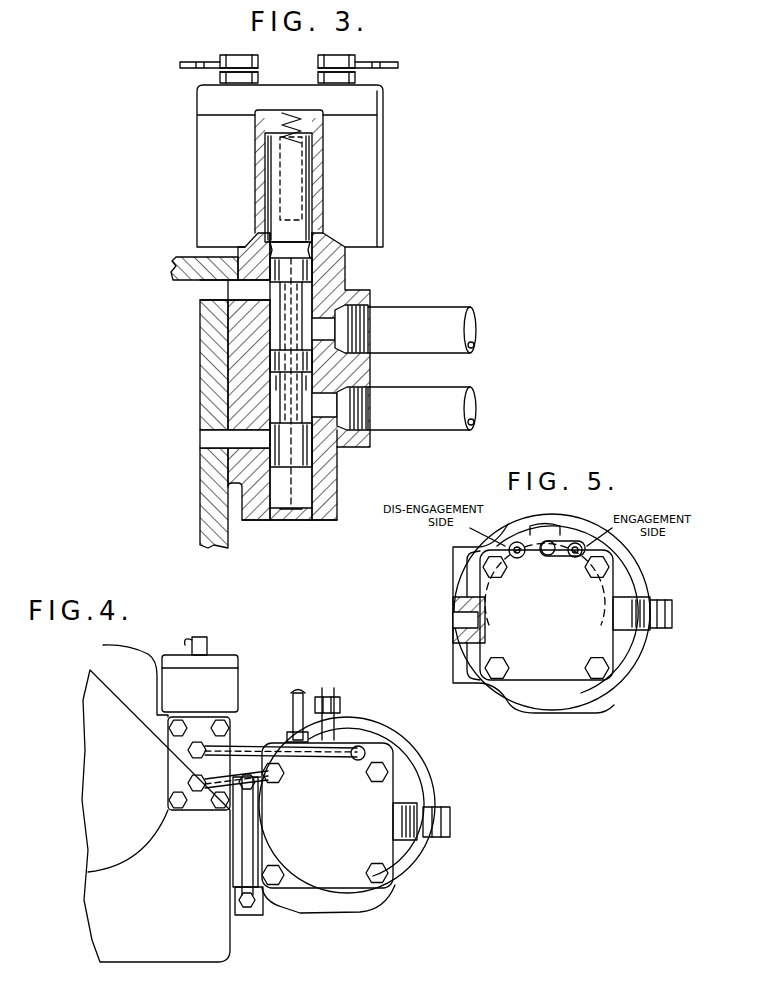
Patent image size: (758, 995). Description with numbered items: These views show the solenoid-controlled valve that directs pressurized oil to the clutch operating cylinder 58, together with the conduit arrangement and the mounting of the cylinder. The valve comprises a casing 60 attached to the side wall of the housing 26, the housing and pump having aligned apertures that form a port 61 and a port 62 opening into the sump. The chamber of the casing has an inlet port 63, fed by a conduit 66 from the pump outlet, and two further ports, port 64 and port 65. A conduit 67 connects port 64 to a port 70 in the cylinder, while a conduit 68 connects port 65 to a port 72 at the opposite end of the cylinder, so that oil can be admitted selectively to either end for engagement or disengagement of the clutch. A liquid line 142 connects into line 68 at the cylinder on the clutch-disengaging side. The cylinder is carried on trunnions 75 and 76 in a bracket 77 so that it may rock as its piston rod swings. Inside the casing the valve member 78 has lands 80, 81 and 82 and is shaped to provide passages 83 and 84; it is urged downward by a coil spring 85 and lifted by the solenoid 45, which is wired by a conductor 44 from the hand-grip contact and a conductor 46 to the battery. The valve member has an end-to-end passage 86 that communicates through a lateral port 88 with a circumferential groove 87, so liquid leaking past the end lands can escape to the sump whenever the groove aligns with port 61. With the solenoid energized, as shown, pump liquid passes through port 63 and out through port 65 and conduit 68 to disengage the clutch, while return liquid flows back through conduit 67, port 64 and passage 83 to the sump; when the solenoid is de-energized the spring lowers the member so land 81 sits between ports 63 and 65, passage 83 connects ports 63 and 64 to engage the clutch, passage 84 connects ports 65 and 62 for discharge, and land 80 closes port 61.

In FIG. 3, the housing 26 is at (210, 503).
In FIG. 3, the conductor 44 is at (196, 60).
In FIG. 3, the solenoid 45 is at (368, 172).
In FIG. 3, the conductor 46 is at (390, 64).
In FIG. 4, the clutch operating cylinder 58 is at (377, 850).
In FIG. 3, the casing 60 is at (340, 270).
In FIG. 3, the port 61 is at (215, 290).
In FIG. 3, the port 62 is at (215, 438).
In FIG. 3, the inlet port 63 is at (276, 378).
In FIG. 3, the port 64 is at (368, 305).
In FIG. 3, the port 65 is at (325, 428).
In FIG. 4, the conduit 66 is at (248, 845).
In FIG. 3, the conduit 67 is at (440, 320).
In FIG. 4, the conduit 67 is at (237, 747).
In FIG. 3, the conduit 68 is at (405, 415).
In FIG. 4, the conduit 68 is at (270, 783).
In FIG. 5, the port 70 is at (617, 547).
In FIG. 5, the port 72 is at (482, 547).
In FIG. 5, the trunnion 75 is at (633, 655).
In FIG. 5, the trunnion 76 is at (465, 622).
In FIG. 5, the bracket 77 is at (600, 698).
In FIG. 3, the valve member 78 is at (275, 180).
In FIG. 3, the land 80 is at (320, 262).
In FIG. 3, the land 81 is at (275, 352).
In FIG. 3, the land 82 is at (322, 480).
In FIG. 3, the passage 83 is at (315, 298).
In FIG. 3, the passage 84 is at (318, 388).
In FIG. 3, the coil spring 85 is at (283, 118).
In FIG. 3, the passage 86 is at (268, 535).
In FIG. 3, the circumferential groove 87 is at (272, 248).
In FIG. 3, the lateral port 88 is at (335, 238).
In FIG. 4, the liquid line 142 is at (292, 697).